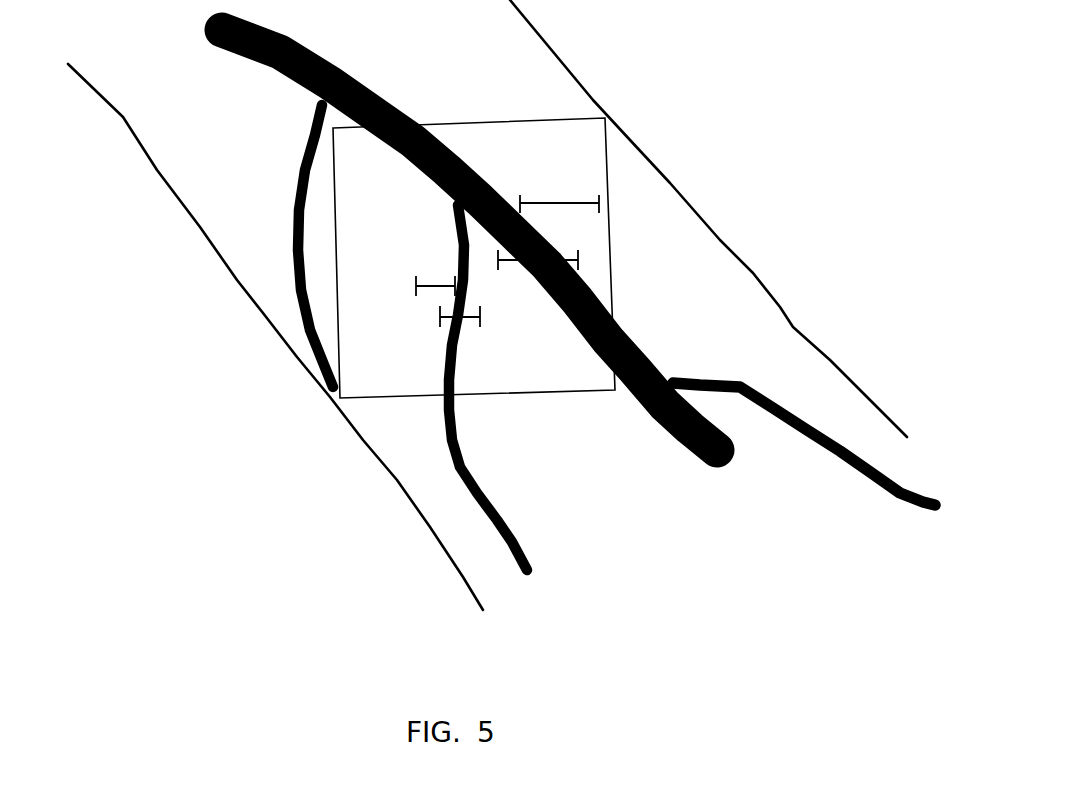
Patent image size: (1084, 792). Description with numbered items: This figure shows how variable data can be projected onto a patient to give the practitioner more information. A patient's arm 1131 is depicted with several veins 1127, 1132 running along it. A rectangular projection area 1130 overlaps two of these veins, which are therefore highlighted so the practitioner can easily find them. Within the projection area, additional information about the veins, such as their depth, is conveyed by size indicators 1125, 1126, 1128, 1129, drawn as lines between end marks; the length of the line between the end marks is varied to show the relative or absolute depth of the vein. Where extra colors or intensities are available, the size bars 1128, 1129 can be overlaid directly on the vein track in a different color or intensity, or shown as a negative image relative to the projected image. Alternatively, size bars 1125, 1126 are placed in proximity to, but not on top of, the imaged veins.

The size indicator 1125 is at (431, 278).
The size indicator 1126 is at (438, 311).
The vein 1127 is at (453, 223).
The size indicator 1128 is at (561, 208).
The size indicator 1129 is at (582, 254).
The projection area 1130 is at (613, 263).
The arm 1131 is at (629, 135).
The vein 1132 is at (631, 390).